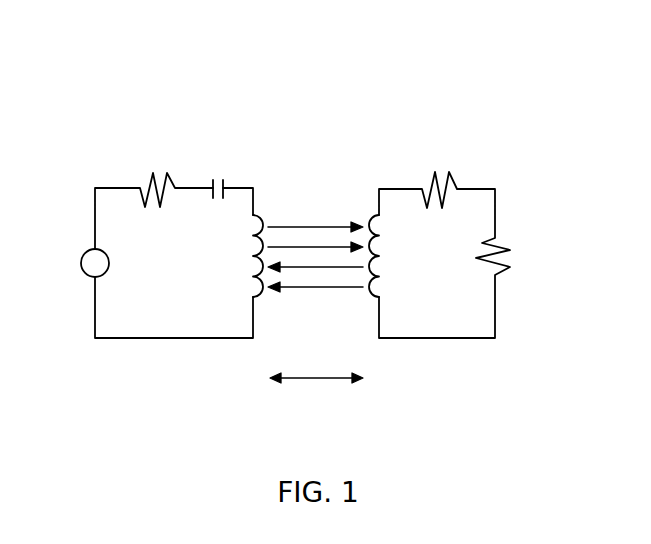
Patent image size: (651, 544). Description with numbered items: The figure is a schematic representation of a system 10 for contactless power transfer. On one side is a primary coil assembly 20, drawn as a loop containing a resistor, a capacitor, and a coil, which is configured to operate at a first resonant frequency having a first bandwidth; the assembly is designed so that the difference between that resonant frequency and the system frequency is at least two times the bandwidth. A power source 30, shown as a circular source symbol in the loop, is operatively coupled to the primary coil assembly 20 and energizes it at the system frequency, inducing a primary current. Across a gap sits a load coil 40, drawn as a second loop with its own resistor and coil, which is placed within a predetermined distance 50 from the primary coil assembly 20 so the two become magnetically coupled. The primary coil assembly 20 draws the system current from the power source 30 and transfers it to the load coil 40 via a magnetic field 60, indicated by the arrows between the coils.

The system 10 is at (533, 63).
The primary coil assembly 20 is at (112, 187).
The power source 30 is at (80, 262).
The load coil 40 is at (476, 188).
The predetermined distance 50 is at (318, 382).
The magnetic field 60 is at (298, 223).